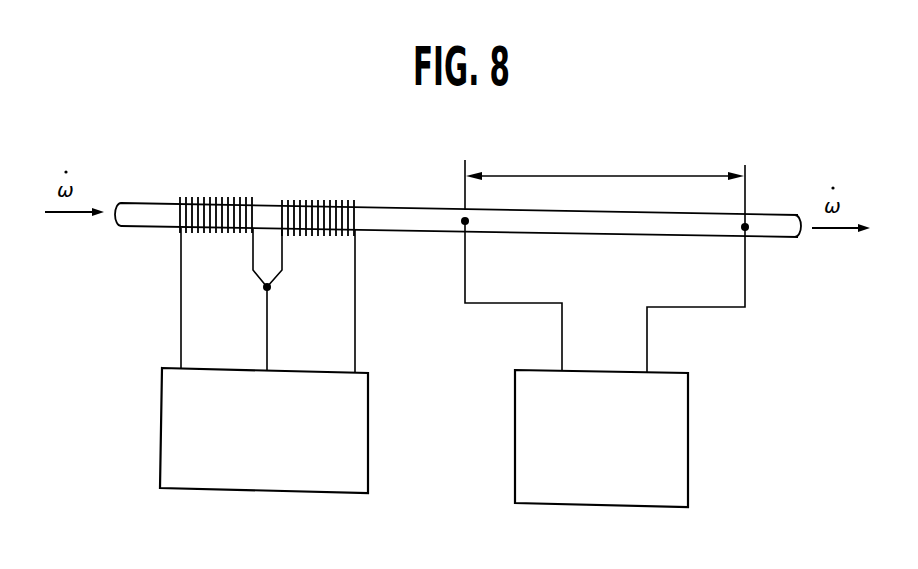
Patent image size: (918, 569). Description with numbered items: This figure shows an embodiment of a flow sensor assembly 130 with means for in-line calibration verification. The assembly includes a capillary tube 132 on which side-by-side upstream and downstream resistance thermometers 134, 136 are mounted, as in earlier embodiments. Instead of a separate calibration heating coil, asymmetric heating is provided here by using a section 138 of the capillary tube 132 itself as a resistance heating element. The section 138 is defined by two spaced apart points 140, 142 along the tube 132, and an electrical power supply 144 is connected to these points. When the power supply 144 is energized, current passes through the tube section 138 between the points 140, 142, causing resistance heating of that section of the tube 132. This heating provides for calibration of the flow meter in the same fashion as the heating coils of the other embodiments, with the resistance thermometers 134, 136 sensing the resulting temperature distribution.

The flow sensor assembly 130 is at (431, 163).
The capillary tube 132 is at (145, 218).
The upstream resistance thermometer 134 is at (217, 200).
The downstream resistance thermometer 136 is at (322, 203).
The section of the capillary tube 138 is at (600, 177).
The point 140 is at (467, 223).
The point 142 is at (743, 229).
The electrical power supply 144 is at (688, 427).